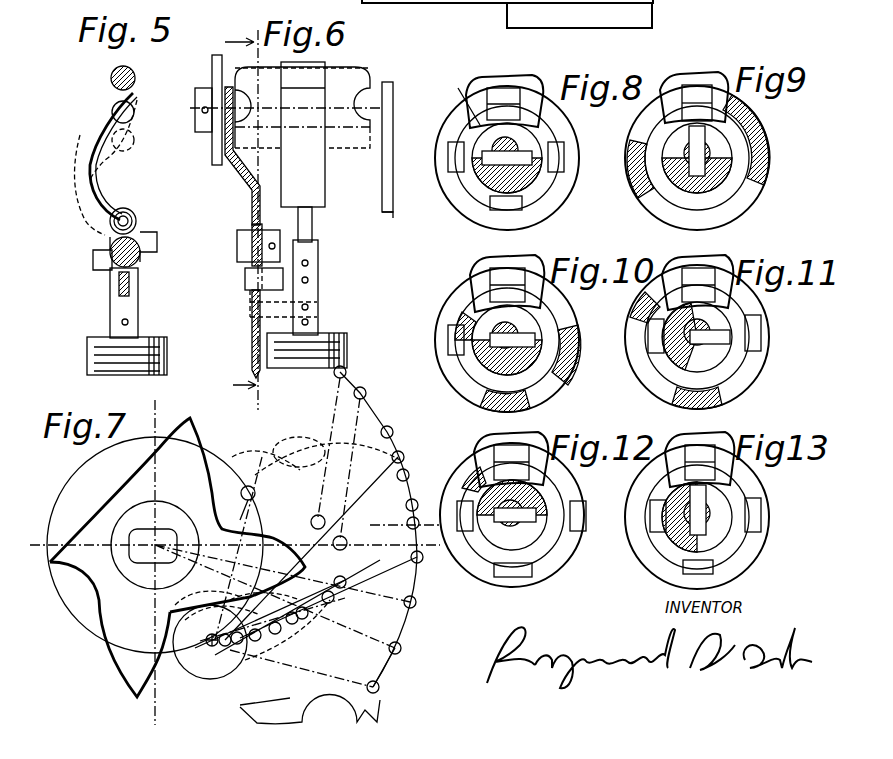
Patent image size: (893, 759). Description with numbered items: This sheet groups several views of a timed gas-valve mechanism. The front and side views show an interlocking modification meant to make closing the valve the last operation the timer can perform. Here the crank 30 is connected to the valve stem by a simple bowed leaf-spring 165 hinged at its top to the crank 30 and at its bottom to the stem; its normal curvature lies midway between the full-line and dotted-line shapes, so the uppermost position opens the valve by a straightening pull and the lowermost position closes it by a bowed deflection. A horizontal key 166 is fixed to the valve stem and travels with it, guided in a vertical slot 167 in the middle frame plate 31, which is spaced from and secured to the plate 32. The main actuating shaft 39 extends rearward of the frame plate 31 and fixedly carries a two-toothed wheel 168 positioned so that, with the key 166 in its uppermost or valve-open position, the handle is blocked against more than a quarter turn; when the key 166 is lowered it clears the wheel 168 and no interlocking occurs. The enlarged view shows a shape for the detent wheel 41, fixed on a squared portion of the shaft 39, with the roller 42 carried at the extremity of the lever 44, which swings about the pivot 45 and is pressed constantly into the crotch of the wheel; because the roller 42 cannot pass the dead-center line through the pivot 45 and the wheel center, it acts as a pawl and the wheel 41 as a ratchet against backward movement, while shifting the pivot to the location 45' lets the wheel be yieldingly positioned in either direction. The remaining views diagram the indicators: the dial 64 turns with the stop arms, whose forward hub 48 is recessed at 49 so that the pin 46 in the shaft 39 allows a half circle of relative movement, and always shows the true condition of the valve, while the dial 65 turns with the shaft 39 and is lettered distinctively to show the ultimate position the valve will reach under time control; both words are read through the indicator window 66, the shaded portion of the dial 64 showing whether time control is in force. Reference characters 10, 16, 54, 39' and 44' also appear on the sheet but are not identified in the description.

In FIG. 8, the housing 10 is at (507, 15).
In FIG. 5, the base block 16 is at (94, 357).
In FIG. 6, the base block 16 is at (327, 335).
In FIG. 6, the crank 30 is at (357, 82).
In FIG. 6, the middle frame plate 31 is at (245, 180).
In FIG. 6, the plate 32 is at (388, 210).
In FIG. 6, the main actuating shaft 39 is at (241, 238).
In FIG. 7, the main actuating shaft 39 is at (155, 531).
In FIG. 8, the main actuating shaft 39 is at (544, 132).
In FIG. 5, the pivot pin 39' is at (150, 261).
In FIG. 7, the detent wheel 41 is at (177, 557).
In FIG. 7, the roller 42 is at (193, 665).
In FIG. 7, the lever 44 is at (310, 704).
In FIG. 7, the follower arm position 44' is at (299, 452).
In FIG. 7, the pivot 45 is at (404, 685).
In FIG. 7, the alternative pivot location 45' is at (297, 539).
In FIG. 8, the pin 46 is at (454, 102).
In FIG. 8, the forward hub 48 is at (488, 183).
In FIG. 8, the recess 49 is at (543, 140).
In FIG. 6, the mounting plate 54 is at (212, 70).
In FIG. 8, the indicator dial 64 is at (450, 122).
In FIG. 9, the indicator dial 64 is at (742, 102).
In FIG. 10, the indicator dial 64 is at (468, 303).
In FIG. 11, the indicator dial 64 is at (660, 314).
In FIG. 12, the indicator dial 64 is at (475, 478).
In FIG. 13, the indicator dial 64 is at (755, 490).
In FIG. 8, the indicator dial 65 is at (453, 197).
In FIG. 9, the indicator dial 65 is at (745, 203).
In FIG. 10, the indicator dial 65 is at (458, 378).
In FIG. 11, the indicator dial 65 is at (658, 383).
In FIG. 12, the indicator dial 65 is at (484, 576).
In FIG. 13, the indicator dial 65 is at (748, 553).
In FIG. 8, the indicator window 66 is at (550, 68).
In FIG. 5, the bowed leaf-spring 165 is at (98, 118).
In FIG. 6, the bowed leaf-spring 165 is at (302, 134).
In FIG. 5, the horizontal key 166 is at (114, 294).
In FIG. 6, the horizontal key 166 is at (246, 288).
In FIG. 6, the vertical slot 167 is at (248, 313).
In FIG. 5, the two-toothed wheel 168 is at (100, 262).
In FIG. 6, the two-toothed wheel 168 is at (262, 212).